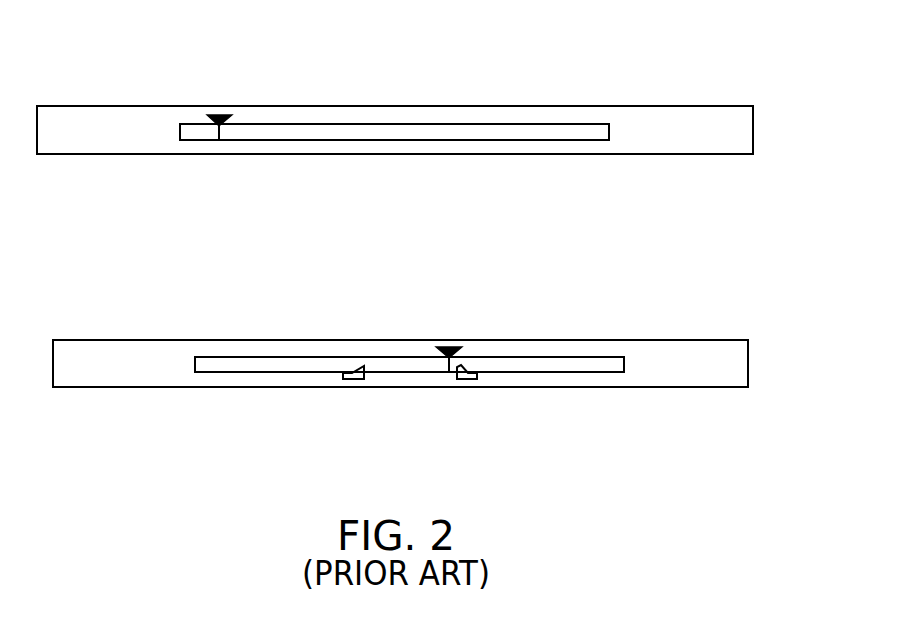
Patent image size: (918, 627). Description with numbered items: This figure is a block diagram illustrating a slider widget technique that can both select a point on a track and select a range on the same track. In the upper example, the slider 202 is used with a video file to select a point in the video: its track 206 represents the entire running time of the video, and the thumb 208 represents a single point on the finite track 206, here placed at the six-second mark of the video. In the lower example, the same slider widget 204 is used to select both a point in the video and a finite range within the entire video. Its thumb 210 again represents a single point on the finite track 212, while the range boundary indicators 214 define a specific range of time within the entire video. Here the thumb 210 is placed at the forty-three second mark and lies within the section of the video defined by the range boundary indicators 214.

The slider 202 is at (702, 86).
The slider widget 204 is at (722, 327).
The track 206 is at (480, 122).
The thumb 208 is at (218, 104).
The thumb 210 is at (448, 339).
The track 212 is at (220, 357).
The range boundary indicators 214 is at (464, 388).